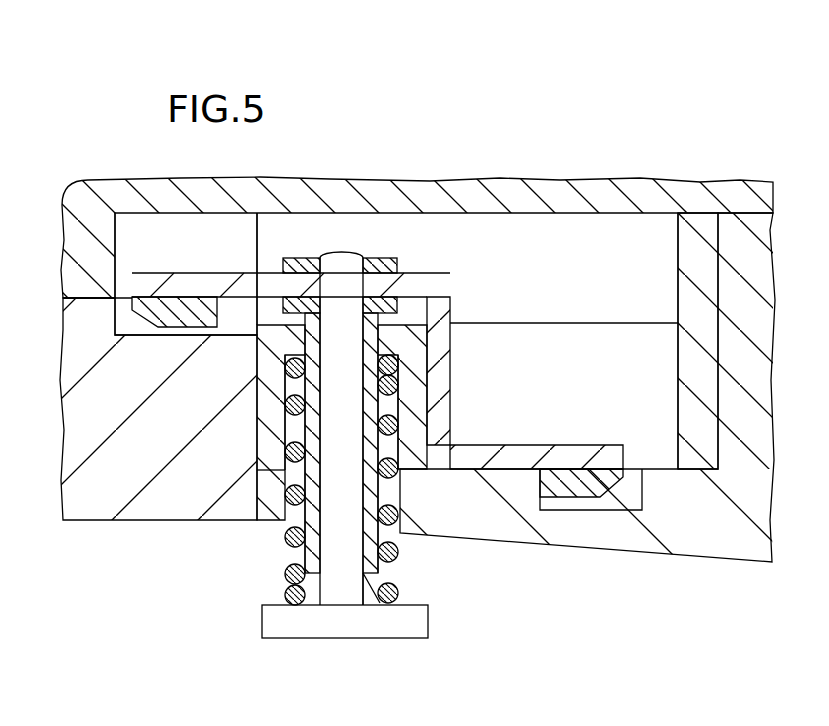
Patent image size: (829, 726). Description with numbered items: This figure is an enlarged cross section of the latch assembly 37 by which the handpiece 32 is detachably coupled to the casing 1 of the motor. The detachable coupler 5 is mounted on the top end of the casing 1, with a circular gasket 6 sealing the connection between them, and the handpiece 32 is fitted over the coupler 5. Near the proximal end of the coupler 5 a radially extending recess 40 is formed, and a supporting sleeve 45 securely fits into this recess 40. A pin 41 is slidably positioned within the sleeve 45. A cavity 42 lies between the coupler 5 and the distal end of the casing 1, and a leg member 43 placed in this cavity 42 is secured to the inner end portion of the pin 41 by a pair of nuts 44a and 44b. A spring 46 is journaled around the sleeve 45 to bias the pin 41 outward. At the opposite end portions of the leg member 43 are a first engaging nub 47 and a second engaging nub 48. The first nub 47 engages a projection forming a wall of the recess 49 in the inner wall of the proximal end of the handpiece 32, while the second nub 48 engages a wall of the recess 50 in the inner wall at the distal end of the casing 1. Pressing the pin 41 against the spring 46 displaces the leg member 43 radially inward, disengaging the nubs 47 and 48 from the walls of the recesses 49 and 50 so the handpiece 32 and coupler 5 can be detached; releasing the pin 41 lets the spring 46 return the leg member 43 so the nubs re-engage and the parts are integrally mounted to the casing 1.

The casing 1 is at (696, 548).
The coupler 5 is at (575, 205).
The gasket 6 is at (688, 415).
The handpiece 32 is at (158, 510).
The latch assembly 37 is at (378, 650).
The recess 40 is at (427, 468).
The pin 41 is at (335, 602).
The cavity 42 is at (529, 222).
The leg member 43 is at (440, 356).
The nut 44a is at (397, 295).
The nut 44b is at (387, 258).
The supporting sleeve 45 is at (298, 522).
The spring 46 is at (300, 585).
The first engaging nub 47 is at (178, 297).
The second engaging nub 48 is at (591, 469).
The recess 49 is at (135, 327).
The recess 50 is at (630, 505).